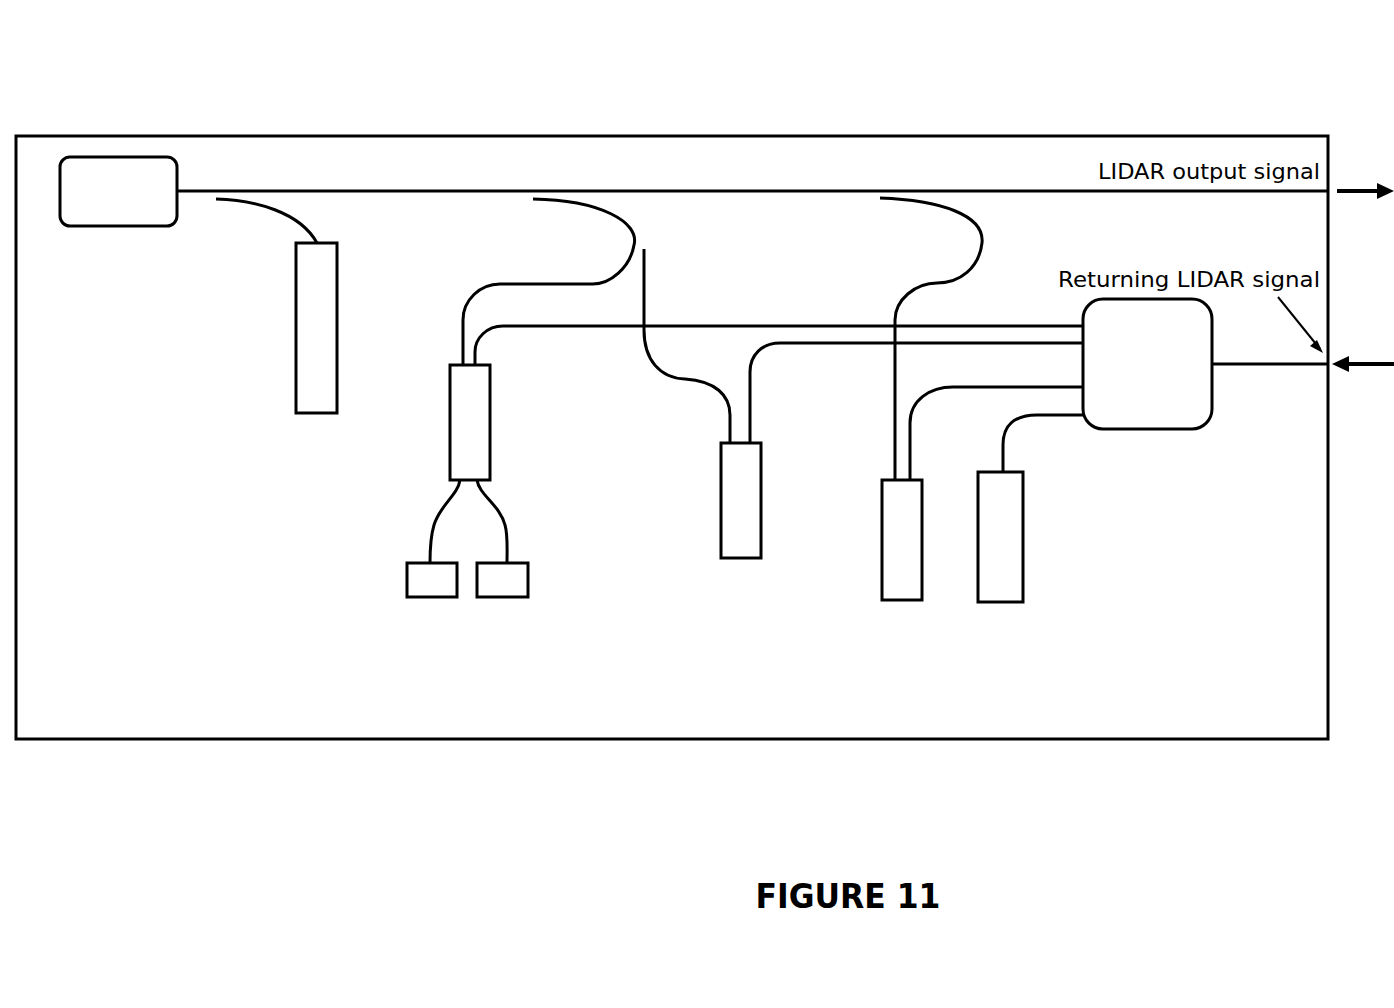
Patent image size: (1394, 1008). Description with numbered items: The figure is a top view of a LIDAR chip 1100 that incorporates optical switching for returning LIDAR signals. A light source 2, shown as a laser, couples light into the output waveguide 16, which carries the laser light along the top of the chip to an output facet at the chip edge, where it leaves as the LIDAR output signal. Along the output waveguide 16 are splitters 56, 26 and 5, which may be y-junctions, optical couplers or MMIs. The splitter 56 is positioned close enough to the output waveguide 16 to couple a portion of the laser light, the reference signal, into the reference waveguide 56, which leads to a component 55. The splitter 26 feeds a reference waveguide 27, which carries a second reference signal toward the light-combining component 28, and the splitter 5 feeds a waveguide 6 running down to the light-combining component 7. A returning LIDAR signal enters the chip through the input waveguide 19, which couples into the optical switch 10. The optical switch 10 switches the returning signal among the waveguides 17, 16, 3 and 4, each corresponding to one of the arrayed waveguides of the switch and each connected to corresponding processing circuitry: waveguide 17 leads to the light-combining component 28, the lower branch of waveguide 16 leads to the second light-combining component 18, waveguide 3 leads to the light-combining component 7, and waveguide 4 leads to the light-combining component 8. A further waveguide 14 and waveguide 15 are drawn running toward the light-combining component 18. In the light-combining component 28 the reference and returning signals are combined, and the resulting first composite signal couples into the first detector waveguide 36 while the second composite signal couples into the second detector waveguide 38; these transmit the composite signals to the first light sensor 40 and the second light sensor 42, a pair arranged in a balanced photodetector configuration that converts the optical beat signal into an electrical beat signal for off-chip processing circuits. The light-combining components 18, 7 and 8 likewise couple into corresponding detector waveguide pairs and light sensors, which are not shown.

The LIDAR chip 1100 is at (672, 376).
The light source 2 is at (118, 191).
The waveguide 3 is at (996, 419).
The waveguide 4 is at (1030, 443).
The splitter 5 is at (931, 240).
The waveguide 6 is at (916, 369).
The light-combining component 7 is at (884, 540).
The light-combining component 8 is at (1020, 537).
The optical switch 10 is at (1147, 364).
The waveguide 14 is at (663, 289).
The waveguide 15 is at (685, 386).
The output waveguide 16 is at (752, 306).
The waveguide 17 is at (779, 331).
The second light-combining component 18 is at (721, 500).
The input waveguide 19 is at (1270, 347).
The splitter 26 is at (567, 241).
The reference waveguide 27 is at (482, 312).
The light-combining component 28 is at (455, 422).
The first detector waveguide 36 is at (422, 521).
The second detector waveguide 38 is at (504, 521).
The first light sensor 40 is at (432, 580).
The second light sensor 42 is at (502, 580).
The light sensor 55 is at (301, 328).
The splitter 56 is at (265, 221).